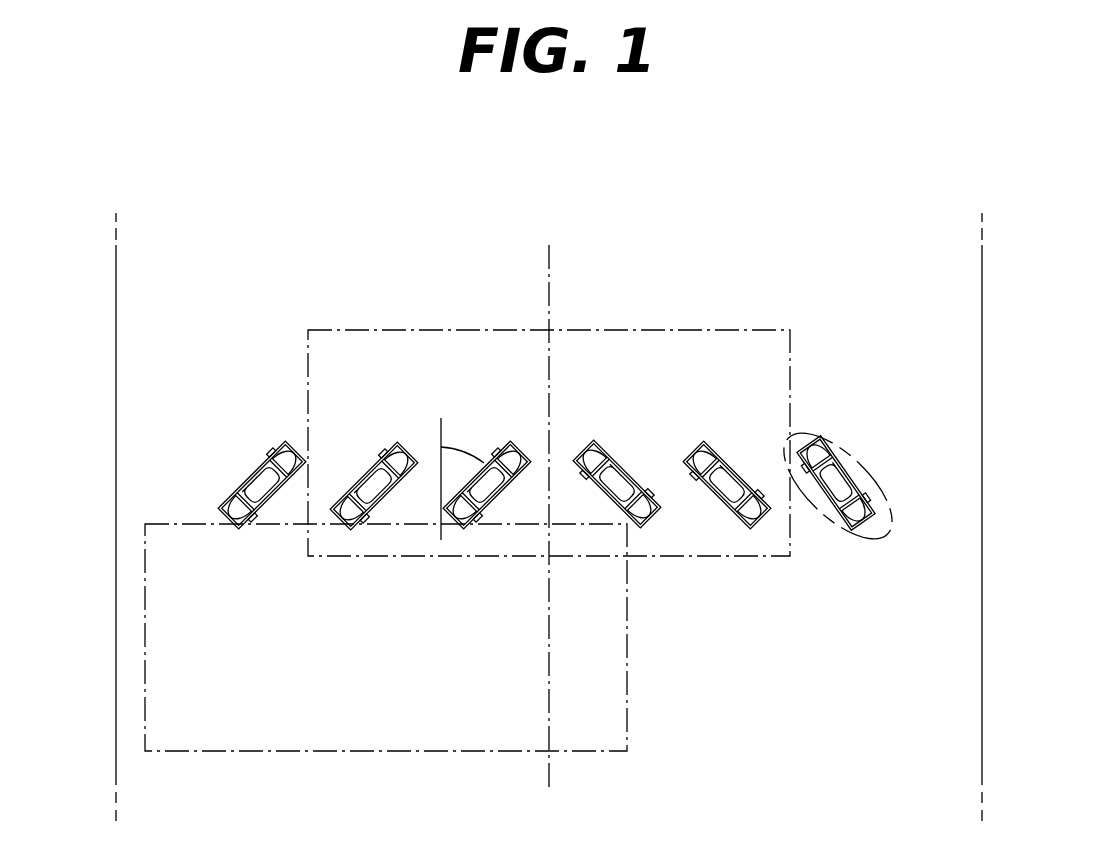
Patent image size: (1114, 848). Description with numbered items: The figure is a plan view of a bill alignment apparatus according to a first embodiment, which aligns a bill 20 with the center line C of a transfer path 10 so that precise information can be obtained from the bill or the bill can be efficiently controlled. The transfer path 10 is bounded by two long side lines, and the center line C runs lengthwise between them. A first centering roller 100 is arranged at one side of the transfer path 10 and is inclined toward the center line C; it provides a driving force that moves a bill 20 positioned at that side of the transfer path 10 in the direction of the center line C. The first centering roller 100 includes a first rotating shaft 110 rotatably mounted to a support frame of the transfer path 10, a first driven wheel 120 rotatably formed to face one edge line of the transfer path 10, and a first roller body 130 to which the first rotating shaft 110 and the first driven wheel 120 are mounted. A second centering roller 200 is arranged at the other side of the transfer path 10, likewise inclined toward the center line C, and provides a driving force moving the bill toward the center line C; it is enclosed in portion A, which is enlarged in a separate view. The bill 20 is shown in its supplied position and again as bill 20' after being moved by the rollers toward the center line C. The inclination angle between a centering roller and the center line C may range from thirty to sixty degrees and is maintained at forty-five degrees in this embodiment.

The transfer path 10 is at (983, 665).
The bill 20 is at (386, 673).
The bill 20' is at (549, 421).
The first centering roller 100 is at (178, 453).
The first rotating shaft 110 is at (254, 474).
The first driven wheel 120 is at (257, 492).
The first roller body 130 is at (258, 455).
The second centering roller 200 is at (838, 450).
The portion A is at (822, 424).
The center line C is at (548, 506).